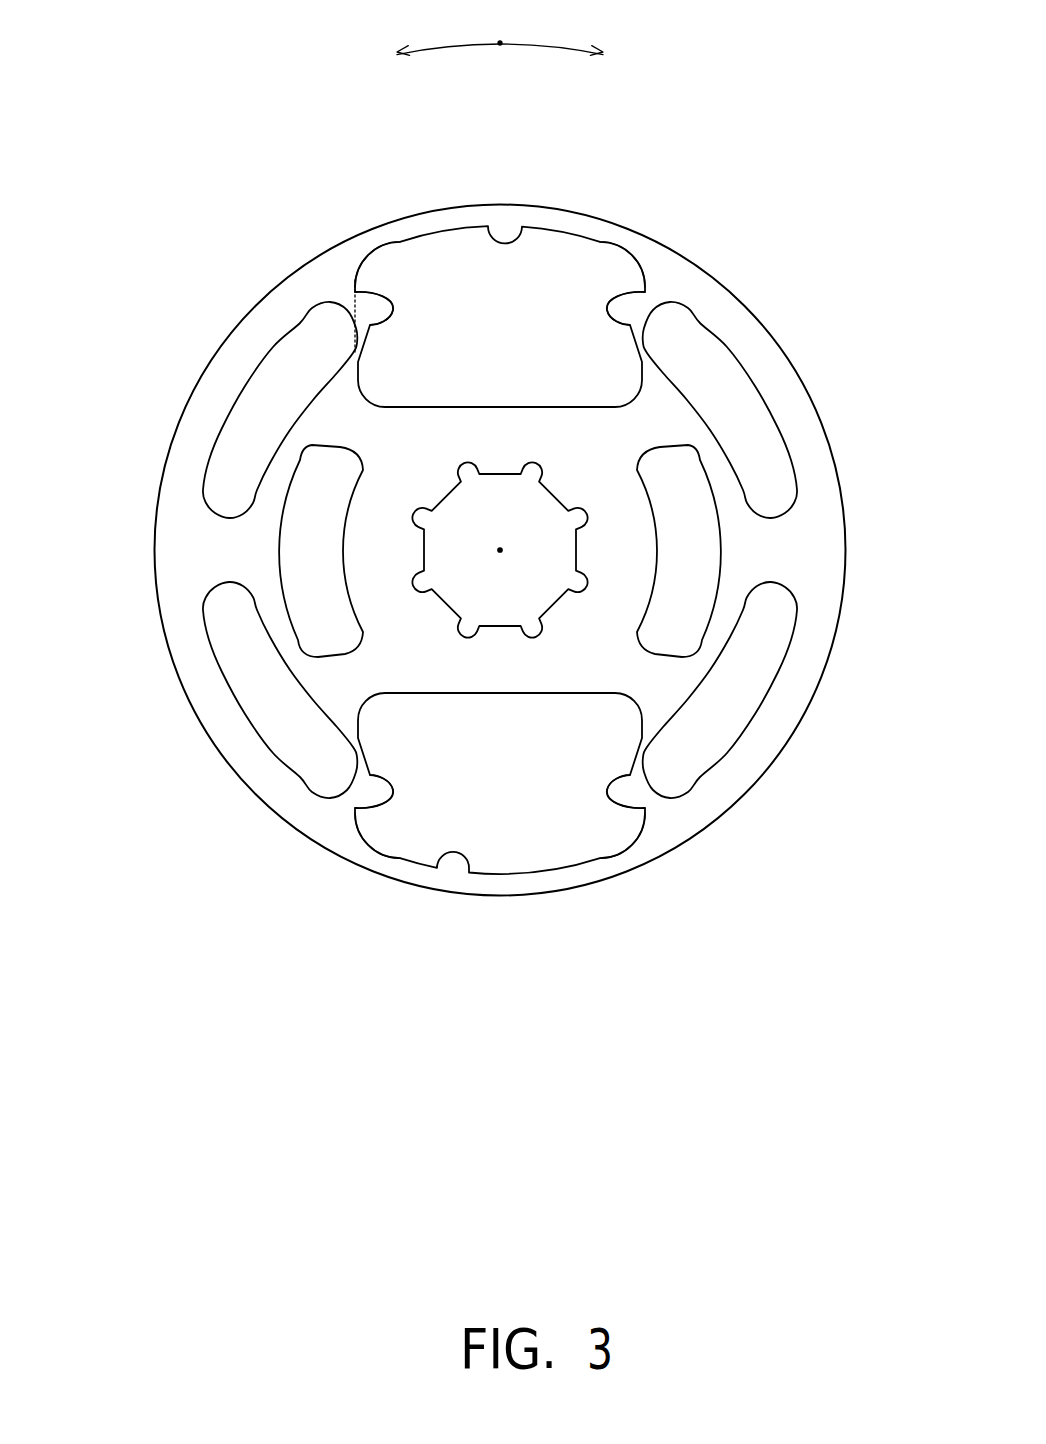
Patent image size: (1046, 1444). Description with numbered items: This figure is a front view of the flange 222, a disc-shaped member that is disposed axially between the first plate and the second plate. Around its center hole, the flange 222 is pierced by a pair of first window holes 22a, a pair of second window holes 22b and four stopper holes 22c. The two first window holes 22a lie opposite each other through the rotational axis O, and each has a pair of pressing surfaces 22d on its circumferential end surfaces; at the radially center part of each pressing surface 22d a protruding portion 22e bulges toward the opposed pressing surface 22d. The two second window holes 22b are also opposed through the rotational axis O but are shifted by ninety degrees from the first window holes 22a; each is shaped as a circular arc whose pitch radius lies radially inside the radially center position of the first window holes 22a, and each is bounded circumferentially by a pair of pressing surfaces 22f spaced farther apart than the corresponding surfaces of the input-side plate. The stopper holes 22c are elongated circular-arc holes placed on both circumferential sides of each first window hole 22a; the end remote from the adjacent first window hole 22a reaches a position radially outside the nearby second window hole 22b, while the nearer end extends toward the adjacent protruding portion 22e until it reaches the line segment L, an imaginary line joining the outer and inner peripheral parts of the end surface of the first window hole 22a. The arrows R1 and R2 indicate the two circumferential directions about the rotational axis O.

The flange 222 is at (268, 813).
The first window hole 22a is at (535, 236).
The second window hole 22b is at (728, 538).
The stopper hole 22c is at (725, 350).
The pressing surface 22d is at (371, 279).
The protruding portion 22e is at (390, 304).
The pressing surface 22f is at (700, 458).
The rotational axis O is at (502, 548).
The line segment L is at (337, 350).
The first rotation direction R1 is at (448, 27).
The second rotation direction R2 is at (550, 27).